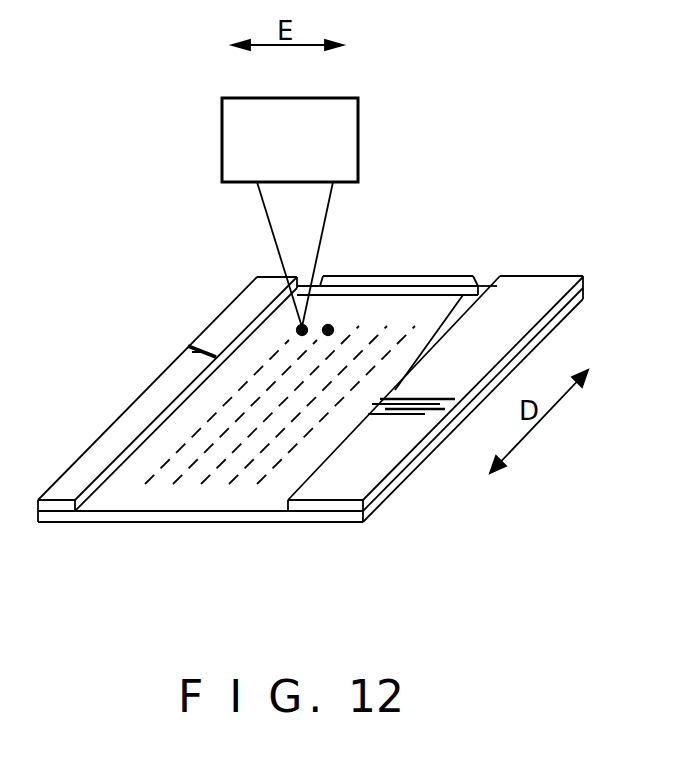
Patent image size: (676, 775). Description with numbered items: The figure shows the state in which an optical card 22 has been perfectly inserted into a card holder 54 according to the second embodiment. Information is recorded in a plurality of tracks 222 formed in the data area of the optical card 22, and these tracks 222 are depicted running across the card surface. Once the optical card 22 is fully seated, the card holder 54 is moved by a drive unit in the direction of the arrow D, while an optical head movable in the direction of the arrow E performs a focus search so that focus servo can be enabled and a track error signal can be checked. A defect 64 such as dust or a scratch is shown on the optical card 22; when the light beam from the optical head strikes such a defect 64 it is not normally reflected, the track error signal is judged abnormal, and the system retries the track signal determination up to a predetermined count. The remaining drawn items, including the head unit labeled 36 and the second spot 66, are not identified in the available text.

The optical head 36 is at (358, 173).
The optical card 22 is at (230, 523).
The card holder 54 is at (535, 277).
The tracks 222 is at (180, 482).
The defect 64 is at (300, 326).
The beam spot 66 is at (329, 325).